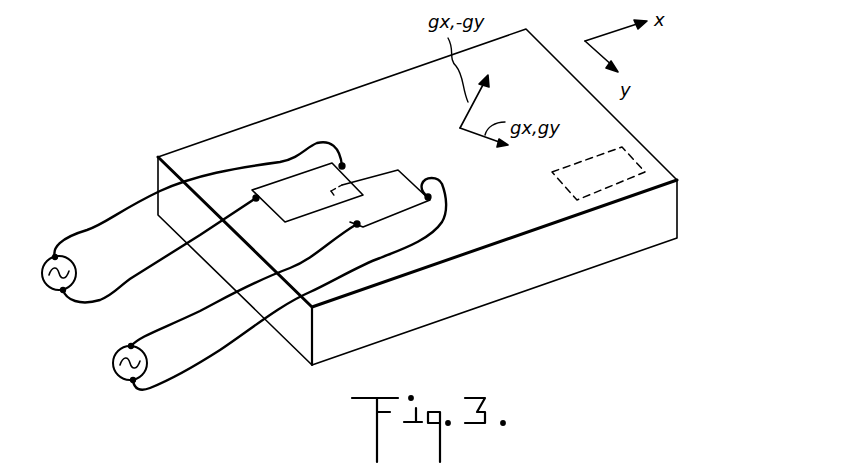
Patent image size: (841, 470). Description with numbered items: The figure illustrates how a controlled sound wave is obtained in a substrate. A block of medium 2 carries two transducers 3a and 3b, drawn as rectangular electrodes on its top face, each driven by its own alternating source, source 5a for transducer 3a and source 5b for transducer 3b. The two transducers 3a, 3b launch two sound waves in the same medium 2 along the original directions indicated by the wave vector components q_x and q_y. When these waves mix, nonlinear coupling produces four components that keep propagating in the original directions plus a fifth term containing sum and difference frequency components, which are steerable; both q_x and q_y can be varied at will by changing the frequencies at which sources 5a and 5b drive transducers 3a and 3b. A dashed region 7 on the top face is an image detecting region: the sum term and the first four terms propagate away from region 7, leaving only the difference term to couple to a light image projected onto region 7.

The medium 2 is at (650, 231).
The transducer 3a is at (342, 166).
The transducer 3b is at (440, 180).
The source 5a is at (42, 274).
The source 5b is at (113, 373).
The region 7 is at (634, 162).